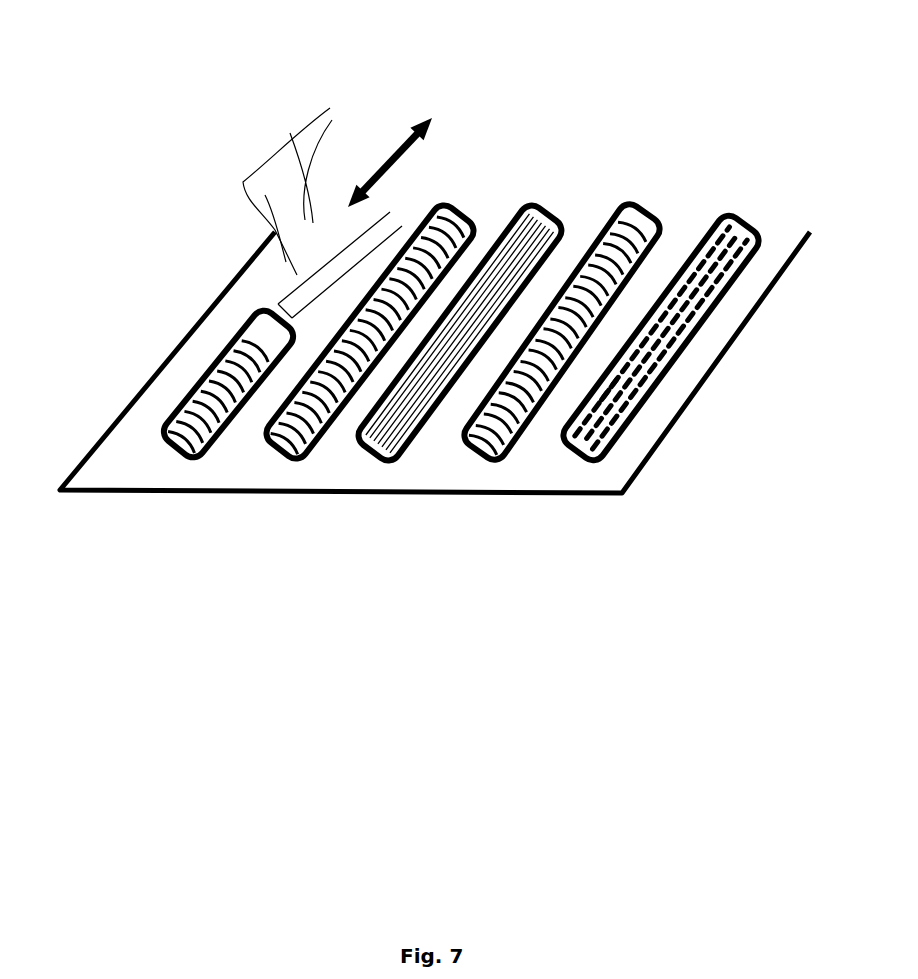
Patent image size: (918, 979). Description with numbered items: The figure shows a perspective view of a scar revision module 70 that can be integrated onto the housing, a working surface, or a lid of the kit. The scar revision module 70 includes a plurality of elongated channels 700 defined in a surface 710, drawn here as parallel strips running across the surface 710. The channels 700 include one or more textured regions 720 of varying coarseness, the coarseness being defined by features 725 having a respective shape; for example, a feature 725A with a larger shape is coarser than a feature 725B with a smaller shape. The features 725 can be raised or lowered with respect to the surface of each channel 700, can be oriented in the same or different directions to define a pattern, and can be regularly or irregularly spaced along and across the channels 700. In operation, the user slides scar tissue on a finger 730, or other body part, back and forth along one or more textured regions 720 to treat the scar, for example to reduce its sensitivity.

The scar revision module 70 is at (430, 50).
The elongated channels 700 is at (545, 205).
The surface 710 is at (127, 445).
The textured regions 720 is at (647, 196).
The features 725 is at (672, 372).
The feature with larger shape 725A is at (638, 411).
The feature with smaller shape 725B is at (458, 470).
The finger 730 is at (262, 282).